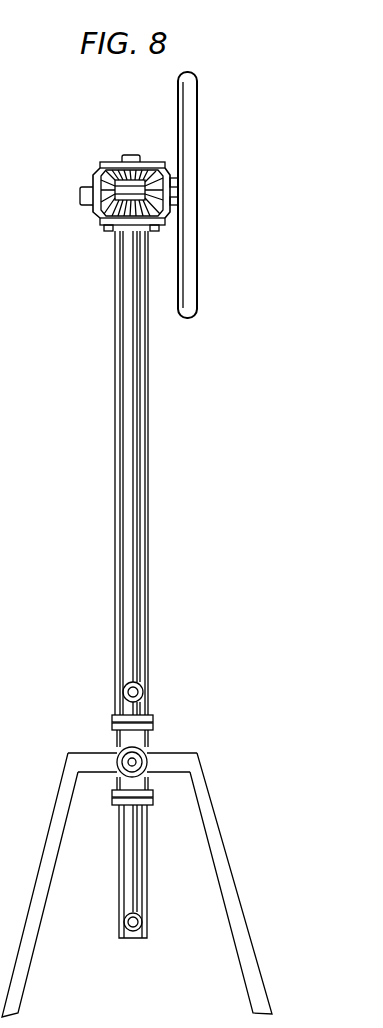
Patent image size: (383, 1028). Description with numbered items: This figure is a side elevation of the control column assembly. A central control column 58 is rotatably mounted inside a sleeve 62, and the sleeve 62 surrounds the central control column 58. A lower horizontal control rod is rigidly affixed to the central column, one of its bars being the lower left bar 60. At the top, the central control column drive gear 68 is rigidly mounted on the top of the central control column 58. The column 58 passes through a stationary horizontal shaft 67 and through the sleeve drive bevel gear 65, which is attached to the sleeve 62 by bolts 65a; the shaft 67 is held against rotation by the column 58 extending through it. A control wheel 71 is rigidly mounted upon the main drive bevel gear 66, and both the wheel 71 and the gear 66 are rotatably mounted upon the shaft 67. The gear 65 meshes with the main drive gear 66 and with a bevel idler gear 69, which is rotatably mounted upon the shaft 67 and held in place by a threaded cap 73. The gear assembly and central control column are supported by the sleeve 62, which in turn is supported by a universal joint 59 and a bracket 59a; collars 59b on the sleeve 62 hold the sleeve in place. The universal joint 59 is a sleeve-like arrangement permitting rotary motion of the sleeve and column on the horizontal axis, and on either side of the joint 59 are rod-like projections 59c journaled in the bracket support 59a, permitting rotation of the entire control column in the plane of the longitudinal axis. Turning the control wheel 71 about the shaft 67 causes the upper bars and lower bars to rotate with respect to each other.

The central control column 58 is at (146, 891).
The universal joint 59 is at (149, 783).
The bracket 59a is at (96, 752).
The collars 59b is at (150, 714).
The rod like projections 59c is at (150, 750).
The lower left bar 60 is at (143, 919).
The sleeve 62 is at (146, 576).
The sleeve drive bevel gear 65 is at (99, 223).
The bolts 65a is at (107, 236).
The main drive bevel gear 66 is at (169, 222).
The stationary horizontal shaft 67 is at (137, 188).
The central control column drive gear 68 is at (115, 166).
The bevel idler gear 69 is at (92, 183).
The control wheel 71 is at (198, 262).
The threaded cap 73 is at (80, 197).